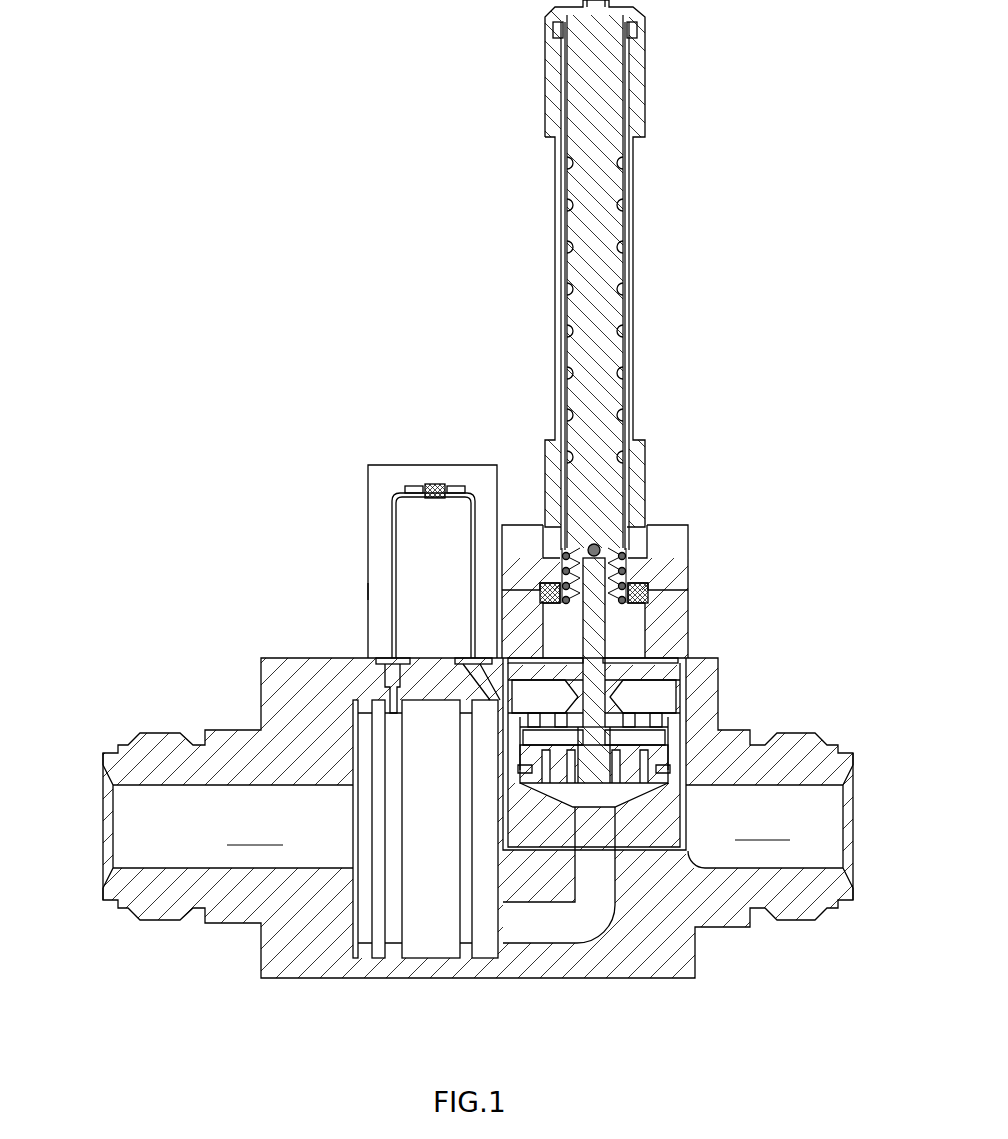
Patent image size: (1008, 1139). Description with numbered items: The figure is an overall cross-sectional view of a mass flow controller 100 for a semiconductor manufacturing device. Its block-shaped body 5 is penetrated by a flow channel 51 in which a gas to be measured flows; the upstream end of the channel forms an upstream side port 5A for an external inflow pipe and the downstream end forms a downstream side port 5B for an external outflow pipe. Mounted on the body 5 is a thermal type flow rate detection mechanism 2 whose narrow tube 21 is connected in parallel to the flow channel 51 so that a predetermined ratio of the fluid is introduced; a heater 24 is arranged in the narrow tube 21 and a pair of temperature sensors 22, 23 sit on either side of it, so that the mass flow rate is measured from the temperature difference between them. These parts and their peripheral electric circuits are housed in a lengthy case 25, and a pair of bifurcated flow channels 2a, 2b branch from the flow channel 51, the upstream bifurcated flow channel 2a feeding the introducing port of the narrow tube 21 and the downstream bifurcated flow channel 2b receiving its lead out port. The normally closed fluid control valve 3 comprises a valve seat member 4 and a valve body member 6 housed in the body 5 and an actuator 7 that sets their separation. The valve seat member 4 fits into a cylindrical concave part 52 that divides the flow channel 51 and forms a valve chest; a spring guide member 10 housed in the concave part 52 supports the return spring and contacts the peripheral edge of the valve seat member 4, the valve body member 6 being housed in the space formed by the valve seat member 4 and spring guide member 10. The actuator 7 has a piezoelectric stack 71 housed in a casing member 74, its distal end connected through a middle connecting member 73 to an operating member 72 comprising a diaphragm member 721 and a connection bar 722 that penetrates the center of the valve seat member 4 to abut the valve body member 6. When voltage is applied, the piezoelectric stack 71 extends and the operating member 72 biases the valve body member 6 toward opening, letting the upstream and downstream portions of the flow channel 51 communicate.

The mass flow controller 100 is at (337, 251).
The flow rate detection mechanism 2 is at (388, 545).
The narrow tube 21 is at (392, 555).
The temperature sensor 22 is at (418, 485).
The temperature sensor 23 is at (448, 485).
The heater 24 is at (432, 484).
The case 25 is at (368, 583).
The bifurcated flow channel 2a is at (383, 676).
The bifurcated flow channel 2b is at (466, 684).
The fluid control valve 3 is at (714, 557).
The valve seat member 4 is at (503, 718).
The body 5 is at (467, 979).
The upstream side port 5A is at (115, 752).
The downstream side port 5B is at (840, 748).
The flow channel 51 is at (140, 826).
The concave part 52 is at (686, 852).
The valve body member 6 is at (515, 757).
The actuator 7 is at (660, 278).
The piezoelectric stack 71 is at (634, 370).
The operating member 72 is at (670, 722).
The diaphragm member 721 is at (620, 654).
The connection bar 722 is at (614, 694).
The middle connecting member 73 is at (598, 545).
The casing member 74 is at (634, 252).
The spring guide member 10 is at (510, 820).